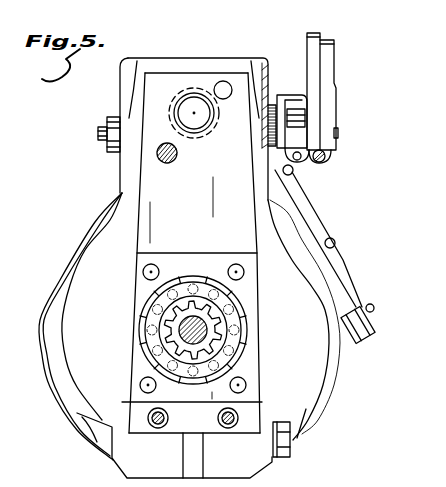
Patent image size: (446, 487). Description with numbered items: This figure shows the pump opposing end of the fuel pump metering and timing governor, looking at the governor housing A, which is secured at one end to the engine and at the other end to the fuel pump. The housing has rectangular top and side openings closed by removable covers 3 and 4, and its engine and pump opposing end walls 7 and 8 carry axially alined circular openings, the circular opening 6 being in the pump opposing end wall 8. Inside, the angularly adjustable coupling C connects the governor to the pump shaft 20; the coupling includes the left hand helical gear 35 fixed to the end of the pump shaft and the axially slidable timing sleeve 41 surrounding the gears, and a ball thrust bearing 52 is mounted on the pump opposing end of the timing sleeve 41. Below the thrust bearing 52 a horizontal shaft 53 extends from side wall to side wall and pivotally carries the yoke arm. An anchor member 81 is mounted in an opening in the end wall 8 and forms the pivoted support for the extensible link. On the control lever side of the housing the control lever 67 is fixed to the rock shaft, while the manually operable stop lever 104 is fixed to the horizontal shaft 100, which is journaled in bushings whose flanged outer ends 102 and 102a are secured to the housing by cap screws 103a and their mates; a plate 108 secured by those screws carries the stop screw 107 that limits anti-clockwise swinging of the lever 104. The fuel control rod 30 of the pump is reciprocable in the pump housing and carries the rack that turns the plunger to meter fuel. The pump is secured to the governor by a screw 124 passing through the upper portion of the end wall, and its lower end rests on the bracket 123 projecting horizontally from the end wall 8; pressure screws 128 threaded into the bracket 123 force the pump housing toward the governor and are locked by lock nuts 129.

The removable cover 3 is at (214, 63).
The screw 124 is at (194, 108).
The anchor member 81 is at (226, 84).
The control lever 67 is at (313, 34).
The plate 108 is at (288, 95).
The manually operable lever 104 is at (337, 73).
The stop screw 107 is at (305, 125).
The horizontal shaft 100 is at (339, 136).
The cap screw 103a is at (105, 131).
The flanged outer end 102a is at (106, 143).
The fuel control rod 30 is at (157, 158).
The flanged outer end 102 is at (269, 139).
The pump opposing end wall 8 is at (255, 200).
The housing A is at (88, 272).
The axially slidable timing sleeve 41 is at (192, 298).
The removable cover 4 is at (337, 267).
The circular opening 6 is at (139, 318).
The angularly adjustable coupling C is at (224, 306).
The shaft 20 is at (210, 322).
The ball thrust bearing 52 is at (141, 343).
The left hand helical gear 35 is at (220, 343).
The engine opposing end wall 7 is at (333, 398).
The pressure screws 128 is at (217, 418).
The lock nuts 129 is at (161, 429).
The horizontal shaft 53 is at (291, 442).
The bracket 123 is at (137, 434).